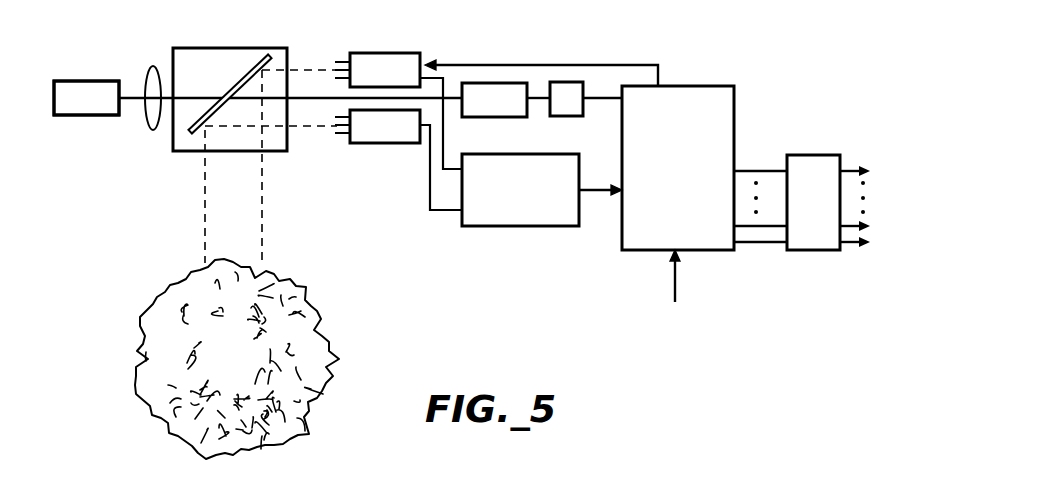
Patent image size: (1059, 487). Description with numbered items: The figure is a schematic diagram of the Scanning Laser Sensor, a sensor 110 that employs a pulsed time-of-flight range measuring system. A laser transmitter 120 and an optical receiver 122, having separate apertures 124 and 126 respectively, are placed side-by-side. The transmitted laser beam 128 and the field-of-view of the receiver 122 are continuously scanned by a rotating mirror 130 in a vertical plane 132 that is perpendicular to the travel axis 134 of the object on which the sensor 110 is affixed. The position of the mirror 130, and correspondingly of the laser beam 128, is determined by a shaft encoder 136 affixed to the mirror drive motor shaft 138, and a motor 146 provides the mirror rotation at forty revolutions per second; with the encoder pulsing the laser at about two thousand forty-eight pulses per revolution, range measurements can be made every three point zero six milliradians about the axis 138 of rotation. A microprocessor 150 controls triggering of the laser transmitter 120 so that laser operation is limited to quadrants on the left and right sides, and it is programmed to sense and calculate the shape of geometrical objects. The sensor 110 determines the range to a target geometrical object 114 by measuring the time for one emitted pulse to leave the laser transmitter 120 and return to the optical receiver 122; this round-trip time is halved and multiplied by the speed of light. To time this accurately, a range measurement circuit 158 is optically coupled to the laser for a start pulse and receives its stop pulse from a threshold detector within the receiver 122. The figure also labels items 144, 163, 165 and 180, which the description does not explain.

The sensor 110 is at (574, 48).
The geometrical object 114 is at (325, 333).
The laser transmitter 120 is at (398, 53).
The optical receiver 122 is at (377, 162).
The aperture 124 is at (343, 55).
The aperture 126 is at (341, 143).
The transmitted laser beam 128 is at (320, 68).
The rotating mirror 130 is at (242, 80).
The vertical plane 132 is at (153, 66).
The travel axis 134 is at (546, 65).
The shaft encoder 136 is at (498, 117).
The mirror drive motor shaft 138 is at (137, 90).
The excitation beam 144 is at (203, 178).
The motor 146 is at (70, 116).
The microprocessor 150 is at (683, 86).
The range measurement circuit 158 is at (525, 226).
The connection line 163 is at (617, 100).
The converter 165 is at (557, 117).
The input 180 is at (675, 273).